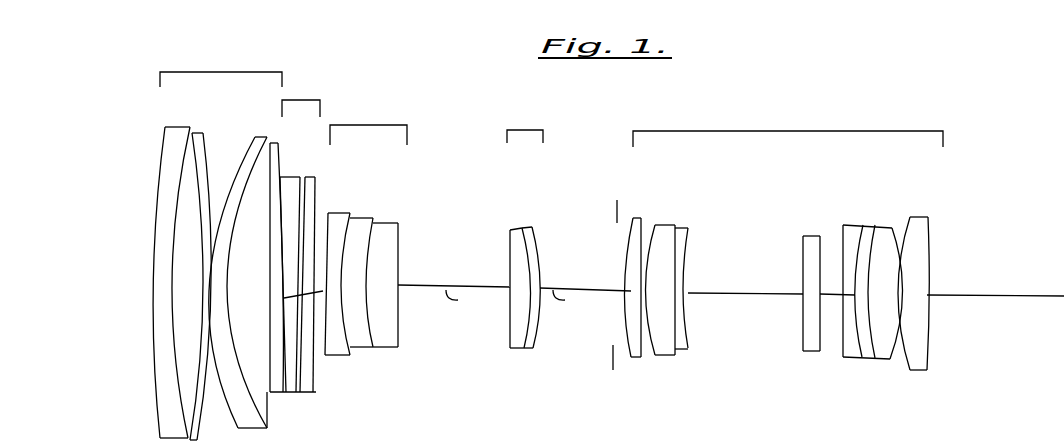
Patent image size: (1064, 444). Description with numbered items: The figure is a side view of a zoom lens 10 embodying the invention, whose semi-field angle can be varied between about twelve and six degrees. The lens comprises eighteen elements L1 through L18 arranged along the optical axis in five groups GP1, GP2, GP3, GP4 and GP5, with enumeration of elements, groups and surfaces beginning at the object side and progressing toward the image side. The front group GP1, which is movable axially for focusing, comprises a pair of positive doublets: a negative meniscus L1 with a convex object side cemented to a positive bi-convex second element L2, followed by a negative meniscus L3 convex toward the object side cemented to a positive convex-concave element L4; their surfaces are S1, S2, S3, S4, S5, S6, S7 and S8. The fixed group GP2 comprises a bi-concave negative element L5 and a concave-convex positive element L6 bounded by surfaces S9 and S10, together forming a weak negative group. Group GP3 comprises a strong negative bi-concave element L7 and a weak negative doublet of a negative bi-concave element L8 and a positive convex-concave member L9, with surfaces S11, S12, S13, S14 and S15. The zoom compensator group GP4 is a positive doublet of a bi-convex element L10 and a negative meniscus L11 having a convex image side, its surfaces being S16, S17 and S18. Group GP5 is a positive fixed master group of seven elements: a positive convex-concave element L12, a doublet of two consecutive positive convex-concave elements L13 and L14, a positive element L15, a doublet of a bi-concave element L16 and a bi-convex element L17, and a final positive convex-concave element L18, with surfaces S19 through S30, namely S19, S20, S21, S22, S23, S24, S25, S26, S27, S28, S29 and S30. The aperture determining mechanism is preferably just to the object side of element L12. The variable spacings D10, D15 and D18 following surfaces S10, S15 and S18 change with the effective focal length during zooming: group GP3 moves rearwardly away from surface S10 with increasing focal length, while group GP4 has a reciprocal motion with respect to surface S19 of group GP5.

The zoom lens 10 is at (459, 96).
The front group GP1 is at (214, 243).
The fixed group GP2 is at (315, 250).
The third group GP3 is at (412, 243).
The zoom compensator group GP4 is at (528, 227).
The positive fixed master group GP5 is at (782, 252).
The negative meniscus L1 is at (162, 418).
The positive bi-convex second element L2 is at (188, 375).
The negative meniscus L3 is at (229, 385).
The positive convex-concave element L4 is at (262, 400).
The bi-concave negative element L5 is at (306, 388).
The concave-convex positive element L6 is at (307, 384).
The strong negative bi-concave element L7 is at (348, 357).
The negative bi-concave element L8 is at (361, 344).
The positive convex-concave member L9 is at (388, 325).
The bi-convex element L10 is at (514, 336).
The negative meniscus L11 is at (529, 337).
The positive convex-concave element L12 is at (634, 359).
The convex-concave element L13 is at (660, 356).
The convex-concave element L14 is at (678, 350).
The positive element L15 is at (812, 323).
The bi-concave element L16 is at (855, 343).
The bi-convex element L17 is at (888, 345).
The positive convex-concave element L18 is at (921, 357).
The lens surface S1 is at (156, 179).
The lens surface S2 is at (181, 203).
The lens surface S3 is at (202, 147).
The lens surface S4 is at (223, 152).
The lens surface S5 is at (258, 137).
The lens surface S6 is at (279, 152).
The lens surface S7 is at (277, 209).
The lens surface S8 is at (286, 233).
The lens surface S9 is at (307, 177).
The lens surface S10 is at (324, 192).
The lens surface S11 is at (334, 212).
The lens surface S12 is at (351, 214).
The lens surface S13 is at (357, 253).
The lens surface S14 is at (371, 270).
The lens surface S15 is at (400, 276).
The lens surface S16 is at (508, 248).
The lens surface S17 is at (520, 232).
The lens surface S18 is at (529, 230).
The lens surface S19 is at (627, 241).
The lens surface S20 is at (640, 218).
The lens surface S21 is at (653, 227).
The lens surface S22 is at (676, 240).
The lens surface S23 is at (688, 249).
The lens surface S24 is at (806, 250).
The lens surface S25 is at (818, 262).
The lens surface S26 is at (842, 245).
The lens surface S27 is at (871, 228).
The lens surface S28 is at (900, 232).
The lens surface S29 is at (911, 228).
The lens surface S30 is at (928, 259).
The spacing D10 is at (285, 298).
The spacing D15 is at (473, 304).
The spacing D18 is at (577, 304).